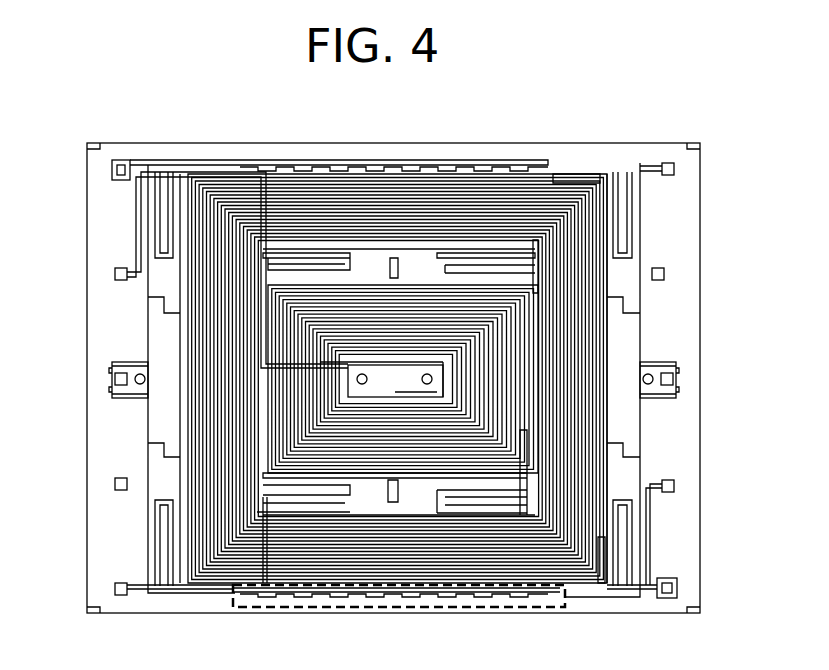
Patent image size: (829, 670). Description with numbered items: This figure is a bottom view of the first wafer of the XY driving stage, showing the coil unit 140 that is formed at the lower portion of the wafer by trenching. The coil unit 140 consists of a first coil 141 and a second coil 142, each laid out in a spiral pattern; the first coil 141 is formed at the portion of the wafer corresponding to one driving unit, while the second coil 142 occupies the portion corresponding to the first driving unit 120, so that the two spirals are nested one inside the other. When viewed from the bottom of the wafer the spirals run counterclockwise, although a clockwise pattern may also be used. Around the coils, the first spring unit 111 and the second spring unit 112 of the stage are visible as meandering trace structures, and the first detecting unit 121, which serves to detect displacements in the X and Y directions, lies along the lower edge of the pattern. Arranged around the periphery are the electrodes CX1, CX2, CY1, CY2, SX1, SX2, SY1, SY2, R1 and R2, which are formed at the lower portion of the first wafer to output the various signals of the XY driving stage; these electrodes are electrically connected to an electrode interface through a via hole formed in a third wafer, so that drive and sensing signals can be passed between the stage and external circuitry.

The first driving unit 120 is at (717, 103).
The coil unit 140 is at (550, 110).
The first coil 141 is at (578, 170).
The second coil 142 is at (462, 288).
The second spring unit 112 is at (345, 253).
The first spring unit 111 is at (623, 258).
The first detecting unit 121 is at (540, 608).
The electrode SX1 is at (112, 170).
The electrode SX2 is at (677, 588).
The electrode SY1 is at (115, 380).
The electrode SY2 is at (676, 380).
The electrode CX1 is at (674, 169).
The electrode CX2 is at (674, 486).
The electrode CY1 is at (115, 275).
The electrode CY2 is at (115, 589).
The electrode R1 is at (115, 484).
The electrode R2 is at (664, 274).